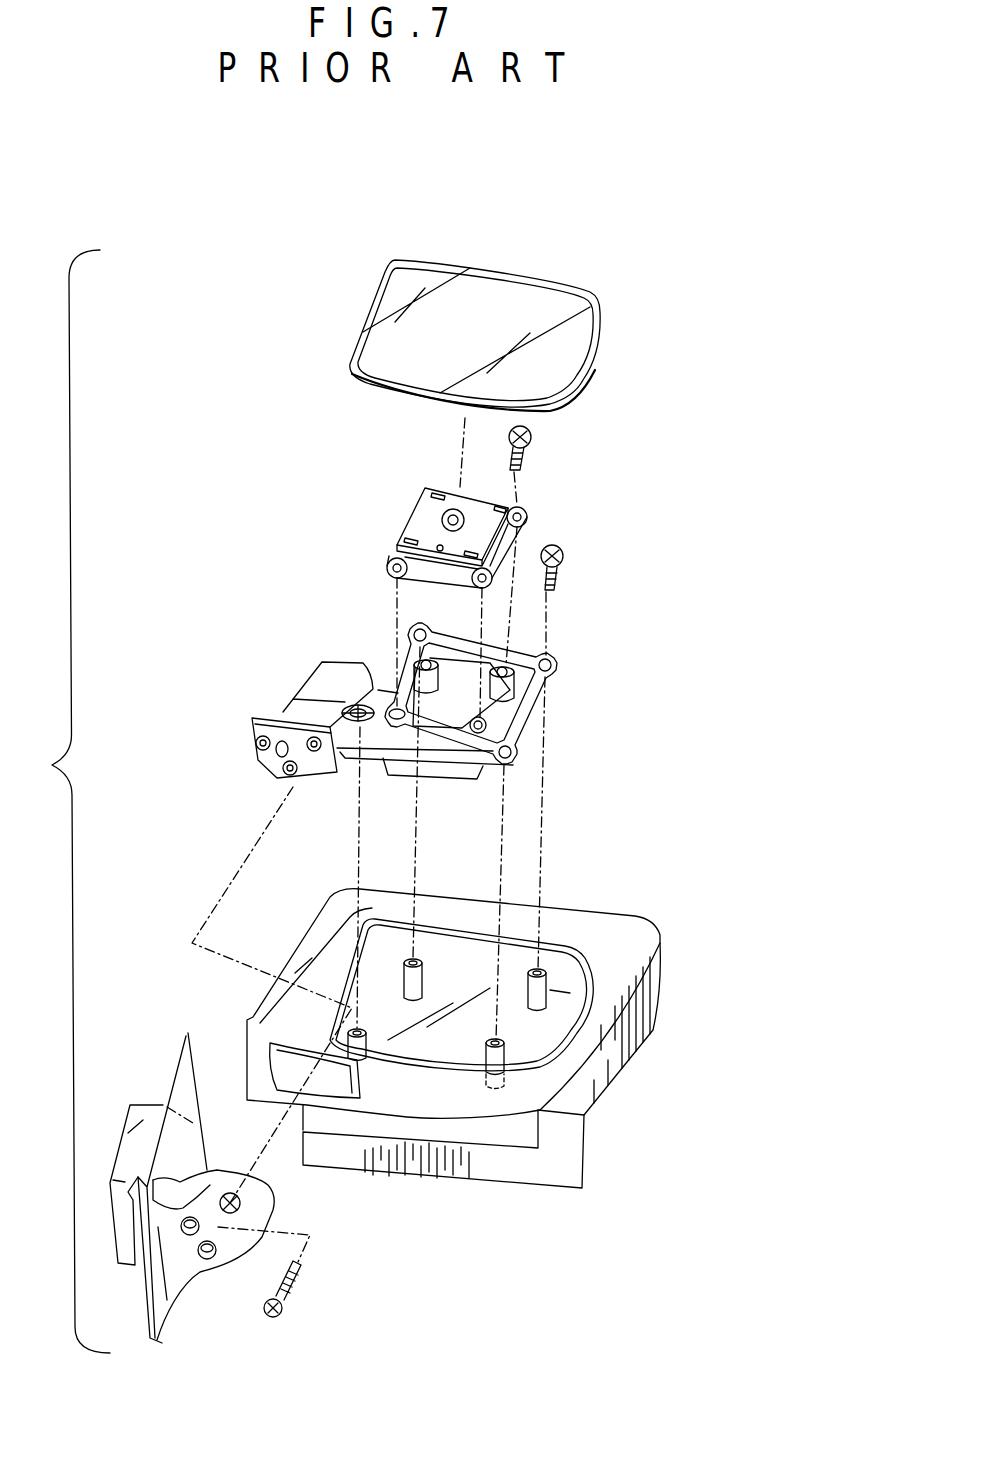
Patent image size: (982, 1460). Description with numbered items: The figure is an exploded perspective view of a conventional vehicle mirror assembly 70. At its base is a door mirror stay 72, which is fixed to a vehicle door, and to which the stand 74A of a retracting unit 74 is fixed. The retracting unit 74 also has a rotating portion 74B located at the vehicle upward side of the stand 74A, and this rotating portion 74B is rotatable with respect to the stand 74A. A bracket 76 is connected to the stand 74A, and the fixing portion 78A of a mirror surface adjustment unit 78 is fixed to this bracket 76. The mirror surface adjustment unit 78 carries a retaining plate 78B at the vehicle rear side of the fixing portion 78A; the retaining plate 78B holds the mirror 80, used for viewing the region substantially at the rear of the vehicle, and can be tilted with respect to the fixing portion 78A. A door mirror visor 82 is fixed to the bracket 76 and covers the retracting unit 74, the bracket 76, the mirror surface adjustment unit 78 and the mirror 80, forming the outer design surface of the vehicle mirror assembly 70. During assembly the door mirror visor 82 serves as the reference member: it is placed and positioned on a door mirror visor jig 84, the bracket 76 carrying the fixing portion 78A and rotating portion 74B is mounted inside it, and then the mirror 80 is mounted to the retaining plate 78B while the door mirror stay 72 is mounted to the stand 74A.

The vehicle mirror assembly 70 is at (221, 444).
The door mirror stay 72 is at (178, 1052).
The retracting unit 74 is at (345, 695).
The stand 74A is at (270, 770).
The rotating portion 74B is at (337, 665).
The bracket 76 is at (558, 668).
The mirror surface adjustment unit 78 is at (413, 517).
The fixing portion 78A is at (440, 572).
The retaining plate 78B is at (418, 530).
The mirror 80 is at (543, 292).
The door mirror visor 82 is at (587, 972).
The door mirror visor jig 84 is at (658, 983).